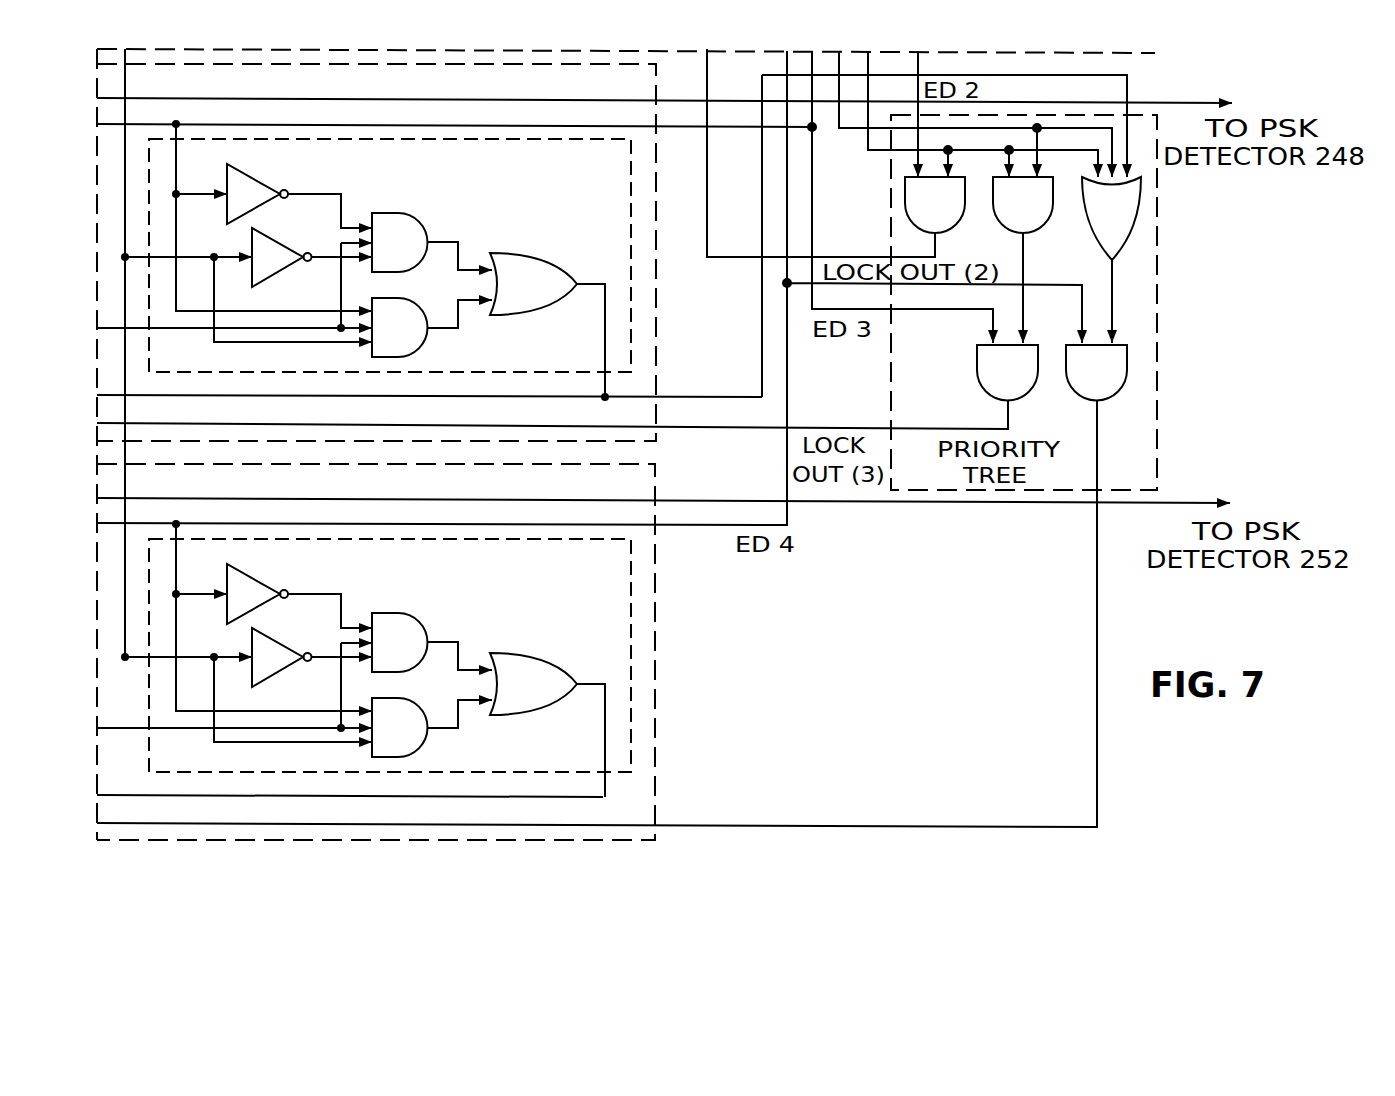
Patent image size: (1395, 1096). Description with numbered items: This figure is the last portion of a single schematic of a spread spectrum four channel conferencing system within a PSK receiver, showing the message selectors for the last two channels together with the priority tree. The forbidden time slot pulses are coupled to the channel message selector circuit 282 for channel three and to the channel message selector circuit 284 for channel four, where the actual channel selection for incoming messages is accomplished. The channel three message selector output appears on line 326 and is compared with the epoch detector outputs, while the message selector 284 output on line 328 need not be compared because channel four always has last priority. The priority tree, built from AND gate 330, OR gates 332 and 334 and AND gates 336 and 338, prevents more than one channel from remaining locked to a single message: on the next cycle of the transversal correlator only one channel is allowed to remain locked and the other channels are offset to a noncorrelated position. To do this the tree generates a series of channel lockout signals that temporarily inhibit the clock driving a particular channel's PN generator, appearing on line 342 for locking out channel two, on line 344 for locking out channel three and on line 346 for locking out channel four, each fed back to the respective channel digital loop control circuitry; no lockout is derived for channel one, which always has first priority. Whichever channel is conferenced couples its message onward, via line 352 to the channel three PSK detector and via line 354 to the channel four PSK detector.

The channel message selector circuit 282 is at (632, 287).
The channel message selector circuit 284 is at (632, 603).
The line 326 is at (672, 399).
The line 328 is at (603, 787).
The AND gate 330 is at (918, 220).
The OR gate 332 is at (1042, 222).
The OR gate 334 is at (1125, 236).
The AND gate 336 is at (988, 380).
The AND gate 338 is at (1093, 392).
The line 342 is at (752, 262).
The line 344 is at (772, 430).
The line 346 is at (878, 827).
The line 352 is at (1155, 103).
The line 354 is at (1167, 503).